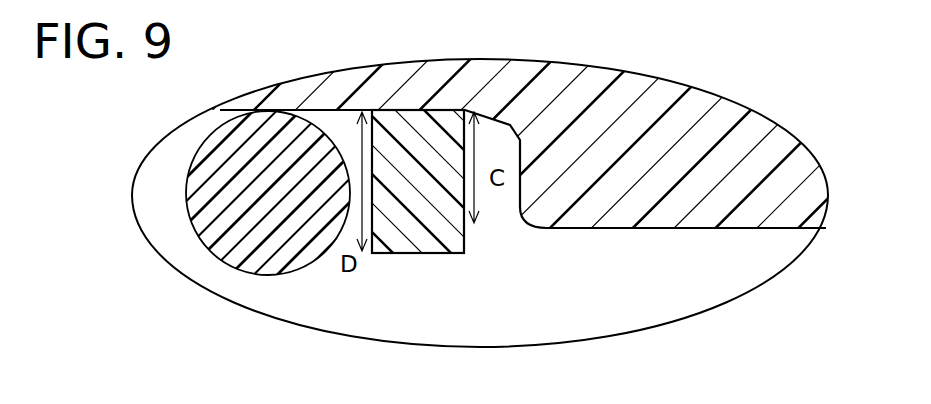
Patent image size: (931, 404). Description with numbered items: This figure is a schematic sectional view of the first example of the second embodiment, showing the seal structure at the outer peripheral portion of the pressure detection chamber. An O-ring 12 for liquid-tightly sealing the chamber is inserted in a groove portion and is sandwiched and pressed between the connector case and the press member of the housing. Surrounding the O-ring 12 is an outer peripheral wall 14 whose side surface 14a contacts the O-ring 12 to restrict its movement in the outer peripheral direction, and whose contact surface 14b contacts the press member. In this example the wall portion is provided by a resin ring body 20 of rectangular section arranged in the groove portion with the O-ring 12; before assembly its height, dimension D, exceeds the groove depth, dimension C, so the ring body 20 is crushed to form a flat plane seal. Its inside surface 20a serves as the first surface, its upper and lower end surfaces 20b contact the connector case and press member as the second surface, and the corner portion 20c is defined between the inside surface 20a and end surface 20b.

The O-ring 12 is at (240, 237).
The outer peripheral wall 14 is at (633, 167).
The side surface 14a is at (527, 143).
The contact surface 14b is at (687, 229).
The ring body 20 is at (466, 253).
The inside surface 20a is at (393, 252).
The end surface 20b is at (404, 110).
The corner portion 20c is at (365, 110).